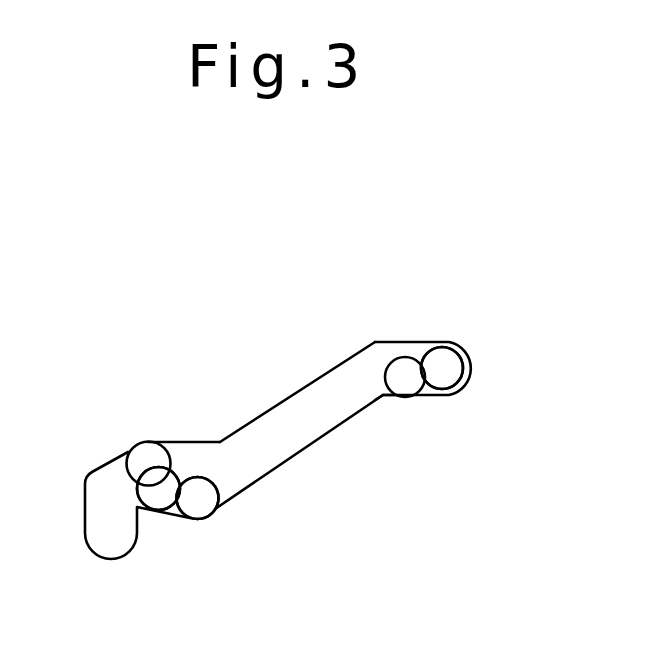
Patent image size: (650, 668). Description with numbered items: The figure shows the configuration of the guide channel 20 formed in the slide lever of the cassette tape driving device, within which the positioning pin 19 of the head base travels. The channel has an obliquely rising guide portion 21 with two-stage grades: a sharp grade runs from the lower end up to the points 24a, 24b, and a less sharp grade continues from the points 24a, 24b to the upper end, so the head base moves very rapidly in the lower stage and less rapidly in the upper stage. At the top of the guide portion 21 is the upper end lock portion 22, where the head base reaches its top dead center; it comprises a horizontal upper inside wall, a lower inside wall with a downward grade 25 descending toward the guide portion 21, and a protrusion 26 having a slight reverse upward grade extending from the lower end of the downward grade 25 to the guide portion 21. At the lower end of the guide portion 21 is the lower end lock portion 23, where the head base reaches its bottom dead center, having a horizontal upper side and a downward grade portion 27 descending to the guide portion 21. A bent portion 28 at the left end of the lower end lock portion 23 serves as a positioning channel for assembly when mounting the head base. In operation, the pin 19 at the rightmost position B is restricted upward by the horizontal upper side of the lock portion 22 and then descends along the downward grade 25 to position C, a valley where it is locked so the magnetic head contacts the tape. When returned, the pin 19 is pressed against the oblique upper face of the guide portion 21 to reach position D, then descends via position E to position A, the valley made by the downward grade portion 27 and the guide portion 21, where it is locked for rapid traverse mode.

The positioning pin 19 is at (218, 485).
The guide channel 20 is at (249, 393).
The guide portion 21 is at (288, 377).
The upper end lock portion 22 is at (473, 332).
The lower end lock portion 23 is at (208, 413).
The grade change point 24a is at (281, 456).
The grade change point 24b is at (247, 417).
The downward grade 25 is at (428, 393).
The protrusion 26 is at (383, 397).
The downward grade portion 27 is at (172, 512).
The bent portion 28 is at (72, 561).
The position A is at (198, 498).
The position B is at (442, 368).
The position C is at (405, 377).
The position D is at (139, 462).
The position E is at (155, 500).